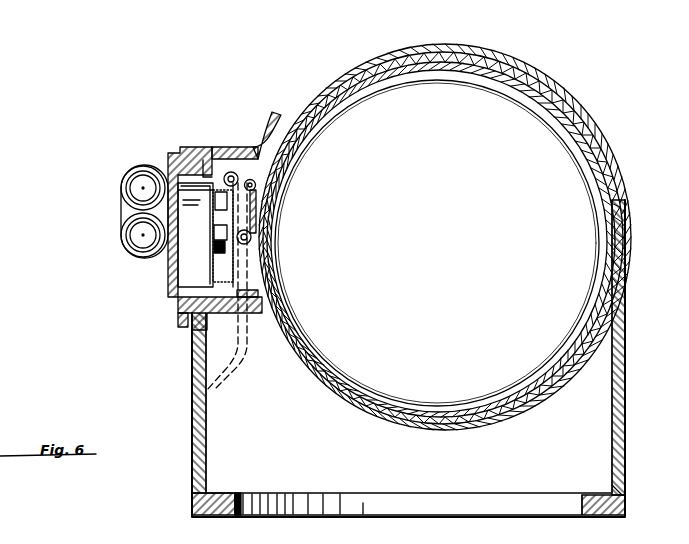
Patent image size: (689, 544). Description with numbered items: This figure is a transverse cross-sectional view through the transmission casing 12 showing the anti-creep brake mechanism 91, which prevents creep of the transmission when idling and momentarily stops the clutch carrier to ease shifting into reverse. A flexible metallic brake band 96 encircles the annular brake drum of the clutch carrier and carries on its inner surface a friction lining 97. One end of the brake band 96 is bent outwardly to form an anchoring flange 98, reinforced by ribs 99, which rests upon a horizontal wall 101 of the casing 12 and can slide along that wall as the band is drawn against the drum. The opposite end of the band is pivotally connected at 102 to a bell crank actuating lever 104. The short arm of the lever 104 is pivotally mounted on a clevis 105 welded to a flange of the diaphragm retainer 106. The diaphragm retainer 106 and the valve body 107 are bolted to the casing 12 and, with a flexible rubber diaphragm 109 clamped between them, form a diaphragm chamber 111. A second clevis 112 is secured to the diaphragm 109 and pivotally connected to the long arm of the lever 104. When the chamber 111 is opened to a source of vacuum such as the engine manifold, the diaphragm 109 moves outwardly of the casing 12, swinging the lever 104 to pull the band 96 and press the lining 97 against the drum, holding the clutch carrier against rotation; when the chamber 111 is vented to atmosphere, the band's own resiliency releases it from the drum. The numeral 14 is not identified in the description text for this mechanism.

The transmission casing 12 is at (340, 62).
The housing 14 is at (408, 372).
The anti-creep brake mechanism 91 is at (225, 126).
The brake band 96 is at (311, 123).
The friction lining 97 is at (296, 152).
The anchoring flange 98 is at (246, 300).
The ribs 99 is at (245, 292).
The horizontal wall 101 is at (236, 312).
The pivotal connection 102 is at (257, 183).
The bell crank actuating lever 104 is at (256, 210).
The clevis 105 is at (230, 157).
The diaphragm retainer 106 is at (208, 147).
The valve body 107 is at (172, 157).
The flexible rubber diaphragm 109 is at (232, 270).
The diaphragm chamber 111 is at (190, 263).
The clevis 112 is at (251, 237).